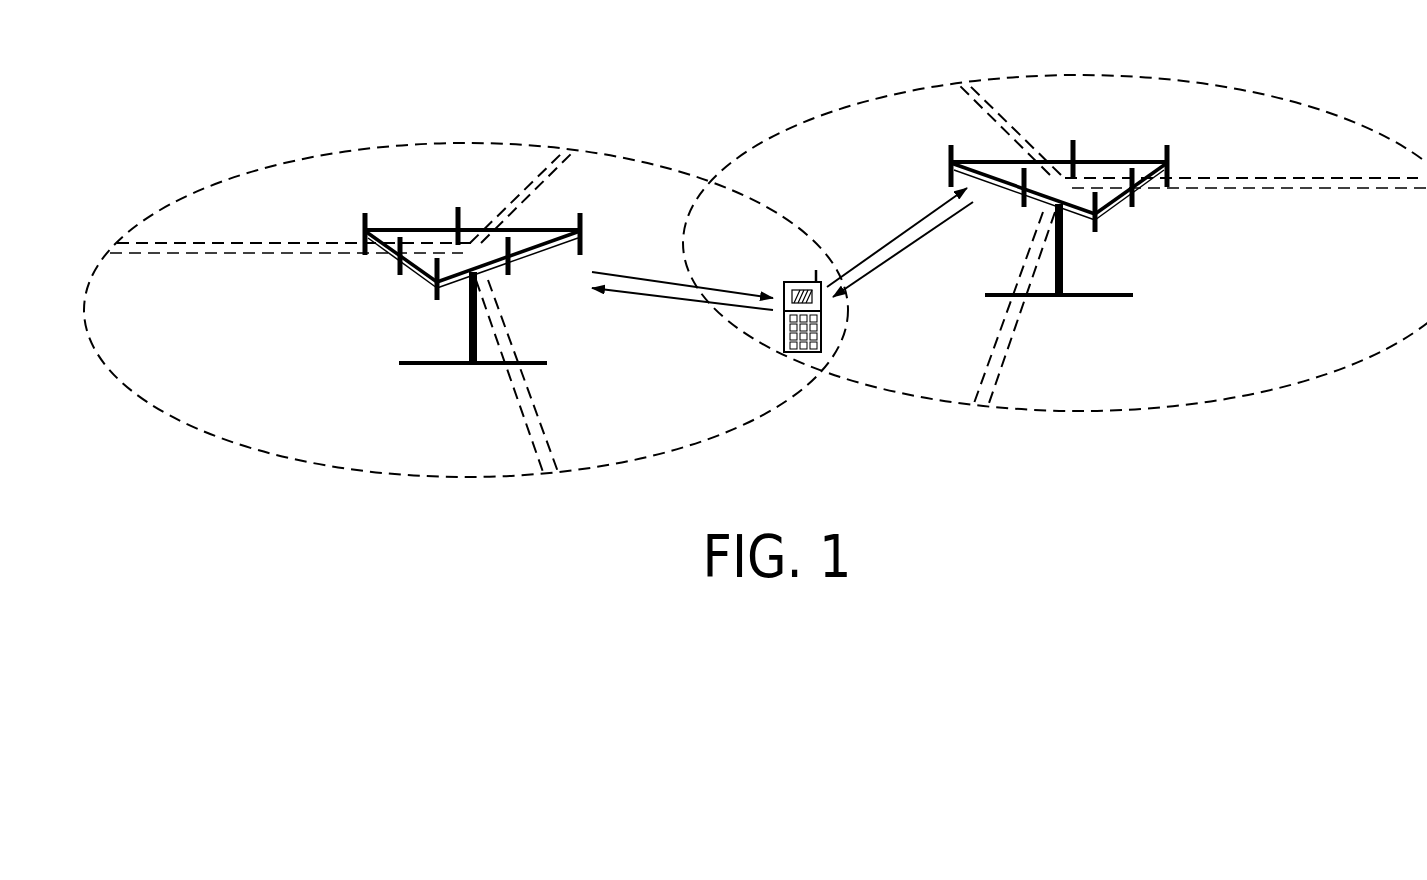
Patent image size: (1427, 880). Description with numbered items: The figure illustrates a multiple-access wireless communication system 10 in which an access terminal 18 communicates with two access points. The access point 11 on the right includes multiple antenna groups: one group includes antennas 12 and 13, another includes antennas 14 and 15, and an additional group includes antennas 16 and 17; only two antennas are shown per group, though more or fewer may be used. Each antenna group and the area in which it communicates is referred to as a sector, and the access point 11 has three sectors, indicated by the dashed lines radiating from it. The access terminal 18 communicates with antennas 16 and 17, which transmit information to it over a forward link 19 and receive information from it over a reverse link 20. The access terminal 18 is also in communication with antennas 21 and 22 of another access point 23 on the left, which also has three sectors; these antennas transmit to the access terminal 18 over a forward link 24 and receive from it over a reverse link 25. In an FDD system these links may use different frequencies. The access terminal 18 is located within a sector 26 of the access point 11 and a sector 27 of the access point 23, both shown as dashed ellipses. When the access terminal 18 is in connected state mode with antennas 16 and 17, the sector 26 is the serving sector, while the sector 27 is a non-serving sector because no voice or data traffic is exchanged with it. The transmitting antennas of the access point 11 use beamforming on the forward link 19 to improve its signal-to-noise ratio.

The multiple-access wireless communication system 10 is at (684, 58).
The access point 11 is at (1057, 253).
The antenna 12 is at (1097, 229).
The antenna 13 is at (1134, 203).
The antenna 14 is at (1169, 152).
The antenna 15 is at (1075, 148).
The antenna 16 is at (948, 151).
The antenna 17 is at (1022, 204).
The access terminal 18 is at (810, 353).
The forward link 19 is at (900, 254).
The reverse link 20 is at (894, 242).
The antenna 21 is at (510, 266).
The antenna 22 is at (583, 218).
The access point 23 is at (497, 324).
The forward link 24 is at (674, 283).
The reverse link 25 is at (672, 302).
The sector 26 is at (812, 120).
The sector 27 is at (680, 166).